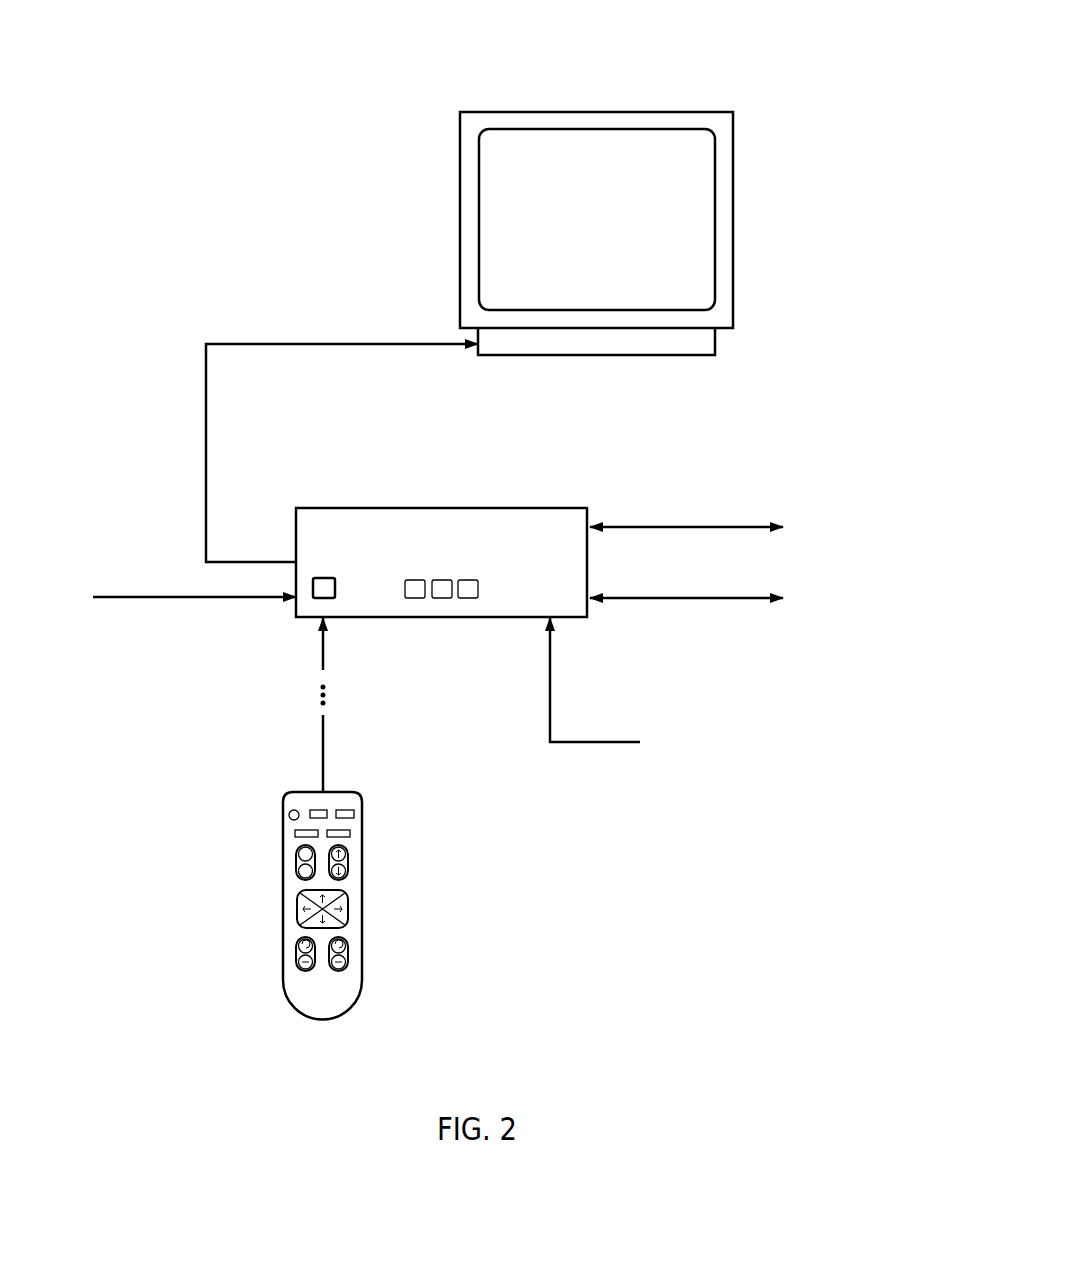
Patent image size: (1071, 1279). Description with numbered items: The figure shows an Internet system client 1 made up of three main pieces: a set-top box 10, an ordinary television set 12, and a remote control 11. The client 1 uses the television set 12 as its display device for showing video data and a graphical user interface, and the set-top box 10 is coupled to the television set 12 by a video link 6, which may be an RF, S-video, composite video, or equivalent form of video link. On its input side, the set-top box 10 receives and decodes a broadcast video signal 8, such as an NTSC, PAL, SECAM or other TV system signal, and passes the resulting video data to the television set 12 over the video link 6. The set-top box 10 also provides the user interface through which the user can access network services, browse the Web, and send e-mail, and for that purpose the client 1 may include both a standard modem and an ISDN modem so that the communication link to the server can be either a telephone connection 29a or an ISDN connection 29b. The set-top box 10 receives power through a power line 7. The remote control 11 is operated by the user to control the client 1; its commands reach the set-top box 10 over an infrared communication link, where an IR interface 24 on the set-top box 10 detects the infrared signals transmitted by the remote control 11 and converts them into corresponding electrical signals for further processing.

The client 1 is at (758, 66).
The television set 12 is at (702, 298).
The video link 6 is at (206, 432).
The broadcast video signal 8 is at (250, 600).
The set-top box 10 is at (574, 609).
The IR interface 24 is at (335, 588).
The telephone connection 29a is at (633, 526).
The ISDN connection 29b is at (633, 597).
The power line 7 is at (611, 743).
The remote control 11 is at (332, 1014).